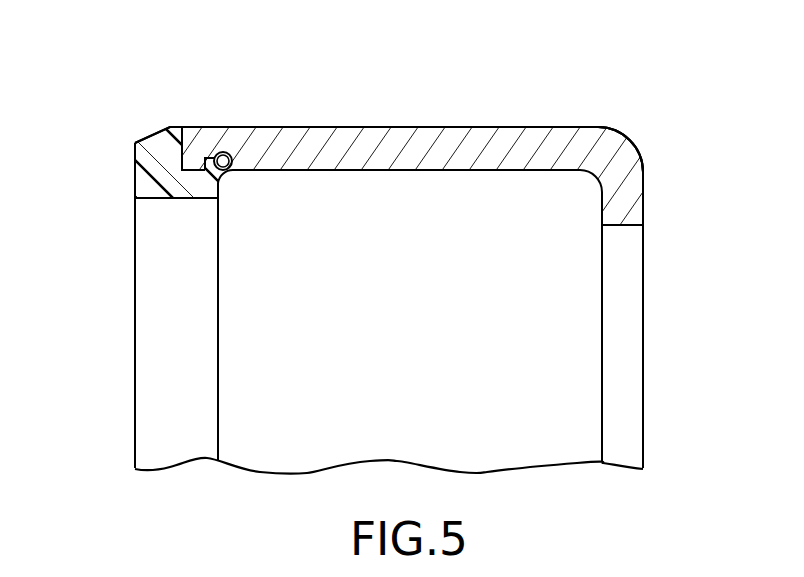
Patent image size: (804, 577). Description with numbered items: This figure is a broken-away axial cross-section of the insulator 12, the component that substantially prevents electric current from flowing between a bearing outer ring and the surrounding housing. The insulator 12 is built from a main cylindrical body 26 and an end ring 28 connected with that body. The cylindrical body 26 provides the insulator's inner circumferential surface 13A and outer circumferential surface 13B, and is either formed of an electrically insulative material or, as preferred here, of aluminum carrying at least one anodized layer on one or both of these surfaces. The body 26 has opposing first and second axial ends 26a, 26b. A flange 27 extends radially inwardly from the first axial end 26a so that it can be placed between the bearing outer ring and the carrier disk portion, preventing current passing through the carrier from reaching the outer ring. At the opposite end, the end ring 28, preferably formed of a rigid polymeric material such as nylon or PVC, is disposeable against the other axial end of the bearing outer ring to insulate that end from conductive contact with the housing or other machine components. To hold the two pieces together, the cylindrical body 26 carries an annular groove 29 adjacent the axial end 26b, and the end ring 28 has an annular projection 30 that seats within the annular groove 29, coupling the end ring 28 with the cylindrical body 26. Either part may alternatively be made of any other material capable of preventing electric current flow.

The insulator 12 is at (128, 84).
The inner circumferential surface 13A is at (393, 170).
The outer circumferential surface 13B is at (370, 128).
The main cylindrical body 26 is at (549, 108).
The first axial end 26a is at (600, 147).
The second axial end 26b is at (177, 160).
The flange 27 is at (638, 208).
The end ring 28 is at (108, 238).
The annular groove 29 is at (228, 168).
The annular projection 30 is at (212, 163).